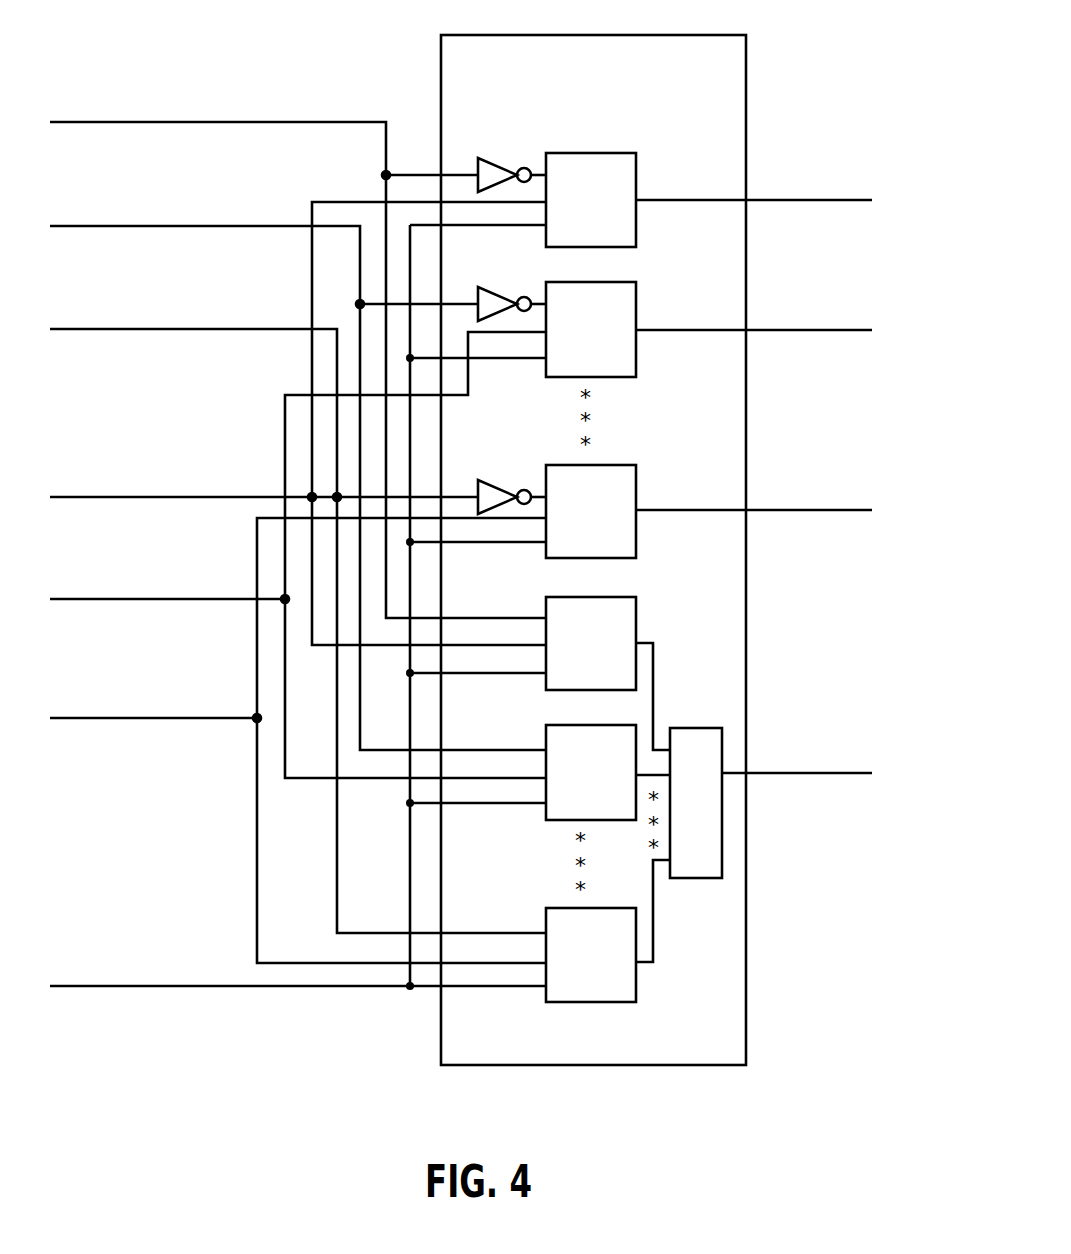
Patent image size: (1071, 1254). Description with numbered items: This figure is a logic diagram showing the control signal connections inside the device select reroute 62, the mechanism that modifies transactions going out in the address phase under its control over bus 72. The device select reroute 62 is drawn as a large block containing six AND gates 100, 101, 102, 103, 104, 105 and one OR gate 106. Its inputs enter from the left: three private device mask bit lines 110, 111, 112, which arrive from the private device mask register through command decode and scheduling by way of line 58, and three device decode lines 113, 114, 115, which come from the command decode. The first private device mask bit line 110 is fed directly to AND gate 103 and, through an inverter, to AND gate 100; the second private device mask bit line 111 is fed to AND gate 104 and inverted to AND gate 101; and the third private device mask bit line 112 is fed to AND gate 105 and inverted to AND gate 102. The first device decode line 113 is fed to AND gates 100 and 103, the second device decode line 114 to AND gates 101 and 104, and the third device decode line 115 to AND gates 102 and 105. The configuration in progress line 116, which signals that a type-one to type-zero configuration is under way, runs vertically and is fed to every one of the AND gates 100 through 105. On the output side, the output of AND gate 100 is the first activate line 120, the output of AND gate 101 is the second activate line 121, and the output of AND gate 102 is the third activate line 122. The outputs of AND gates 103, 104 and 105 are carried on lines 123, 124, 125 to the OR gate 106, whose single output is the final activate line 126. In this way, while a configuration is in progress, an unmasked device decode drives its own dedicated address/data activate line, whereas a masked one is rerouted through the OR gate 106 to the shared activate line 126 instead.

The line 58 is at (272, 55).
The device select reroute 62 is at (598, 36).
The bus 72 is at (818, 95).
The AND gate 100 is at (627, 225).
The AND gate 101 is at (627, 355).
The AND gate 102 is at (627, 535).
The AND gate 103 is at (633, 623).
The AND gate 104 is at (570, 817).
The AND gate 105 is at (630, 982).
The OR gate 106 is at (680, 868).
The private device mask bit 17 line 110 is at (305, 121).
The private device mask bit 20 line 111 is at (293, 228).
The private device mask bit 25 line 112 is at (292, 332).
The device decode=device 1 line 113 is at (260, 497).
The device decode=device 4 line 114 is at (270, 600).
The device decode=device 9 line 115 is at (242, 720).
The Type 1 to Type 0 configuration in progress line 116 is at (377, 988).
The activate AD17 line 120 is at (653, 198).
The activate AD20 line 121 is at (653, 328).
The activate AD25 line 122 is at (653, 510).
The line 123 is at (655, 695).
The line 124 is at (650, 773).
The line 125 is at (652, 908).
The activate AD31 line 126 is at (850, 776).